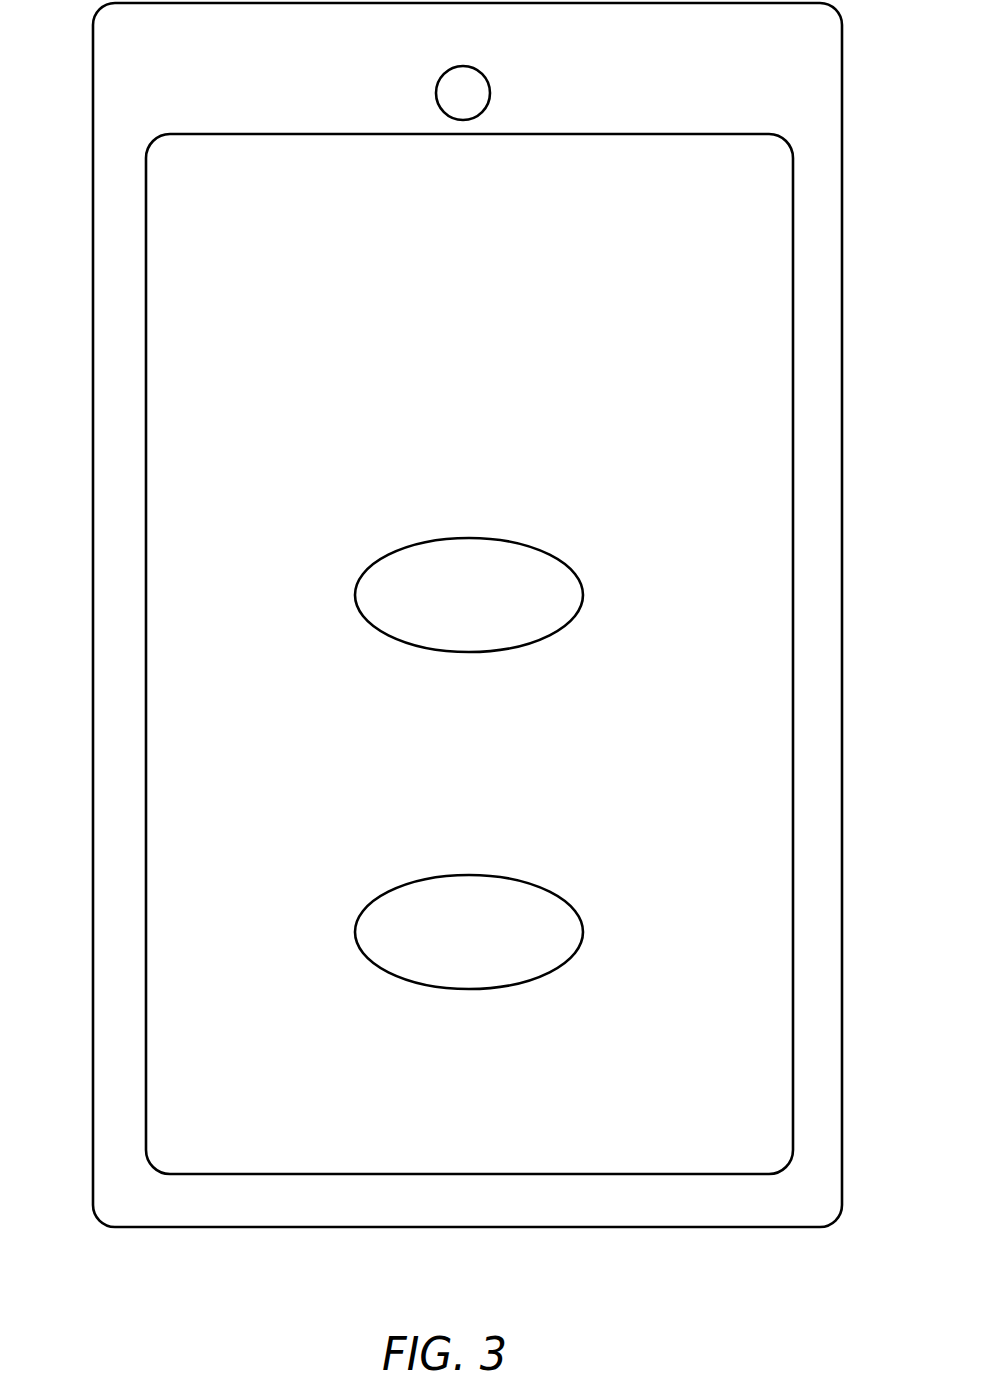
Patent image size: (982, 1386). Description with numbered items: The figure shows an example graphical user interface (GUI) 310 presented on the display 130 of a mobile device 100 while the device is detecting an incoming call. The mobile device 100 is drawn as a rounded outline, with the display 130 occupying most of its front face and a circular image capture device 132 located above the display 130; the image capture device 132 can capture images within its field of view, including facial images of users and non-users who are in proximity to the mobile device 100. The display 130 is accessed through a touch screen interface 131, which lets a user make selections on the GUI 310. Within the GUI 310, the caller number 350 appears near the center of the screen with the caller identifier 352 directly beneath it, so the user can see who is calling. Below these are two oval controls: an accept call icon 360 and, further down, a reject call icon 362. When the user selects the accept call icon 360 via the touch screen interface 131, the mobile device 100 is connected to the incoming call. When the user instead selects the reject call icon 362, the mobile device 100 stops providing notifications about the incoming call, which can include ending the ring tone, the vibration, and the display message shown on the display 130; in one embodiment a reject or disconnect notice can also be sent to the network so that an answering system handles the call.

The mobile device 100 is at (562, 36).
The display 130 is at (530, 166).
The touch screen interface 131 is at (205, 240).
The image capture device 132 is at (490, 91).
The graphical user interface 310 is at (205, 408).
The caller number 350 is at (560, 392).
The caller identifier 352 is at (563, 453).
The accept call icon 360 is at (578, 578).
The reject call icon 362 is at (567, 902).